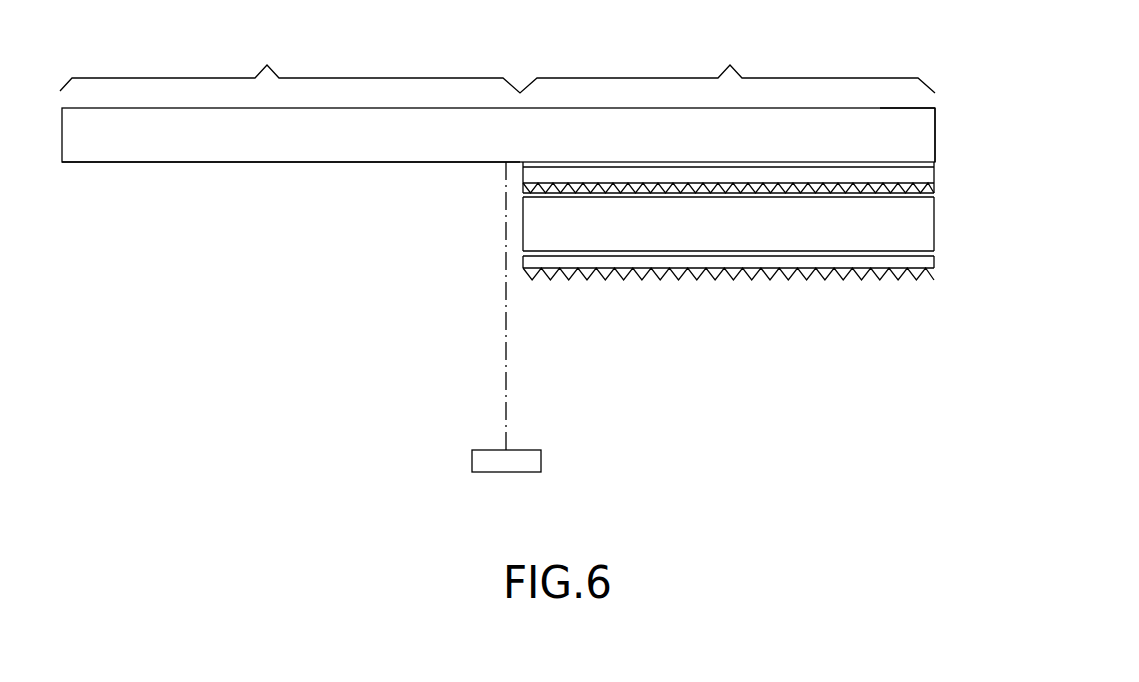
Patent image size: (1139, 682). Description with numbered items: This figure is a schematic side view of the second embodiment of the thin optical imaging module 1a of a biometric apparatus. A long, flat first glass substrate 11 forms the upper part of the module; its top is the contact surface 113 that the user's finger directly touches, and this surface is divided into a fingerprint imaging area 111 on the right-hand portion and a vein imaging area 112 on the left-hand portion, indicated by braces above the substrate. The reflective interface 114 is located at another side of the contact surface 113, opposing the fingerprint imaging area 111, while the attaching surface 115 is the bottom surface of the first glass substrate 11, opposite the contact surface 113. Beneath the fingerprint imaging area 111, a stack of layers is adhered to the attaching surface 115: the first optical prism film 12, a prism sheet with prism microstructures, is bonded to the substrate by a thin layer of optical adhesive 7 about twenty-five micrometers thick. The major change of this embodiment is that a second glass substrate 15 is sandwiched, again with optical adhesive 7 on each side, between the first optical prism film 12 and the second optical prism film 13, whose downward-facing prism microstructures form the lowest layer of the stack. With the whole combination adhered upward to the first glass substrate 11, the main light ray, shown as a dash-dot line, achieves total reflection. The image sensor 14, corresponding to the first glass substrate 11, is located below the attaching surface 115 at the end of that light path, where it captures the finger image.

The optical imaging module 1a is at (1052, 88).
The first glass substrate 11 is at (935, 133).
The fingerprint imaging area 111 is at (727, 72).
The vein imaging area 112 is at (291, 69).
The contact surface 113 is at (925, 105).
The reflective interface 114 is at (881, 113).
The attaching surface 115 is at (368, 162).
The optical adhesive 7 is at (935, 165).
The first optical prism film 12 is at (935, 175).
The second glass substrate 15 is at (935, 218).
The second optical prism film 13 is at (935, 268).
The image sensor 14 is at (541, 462).